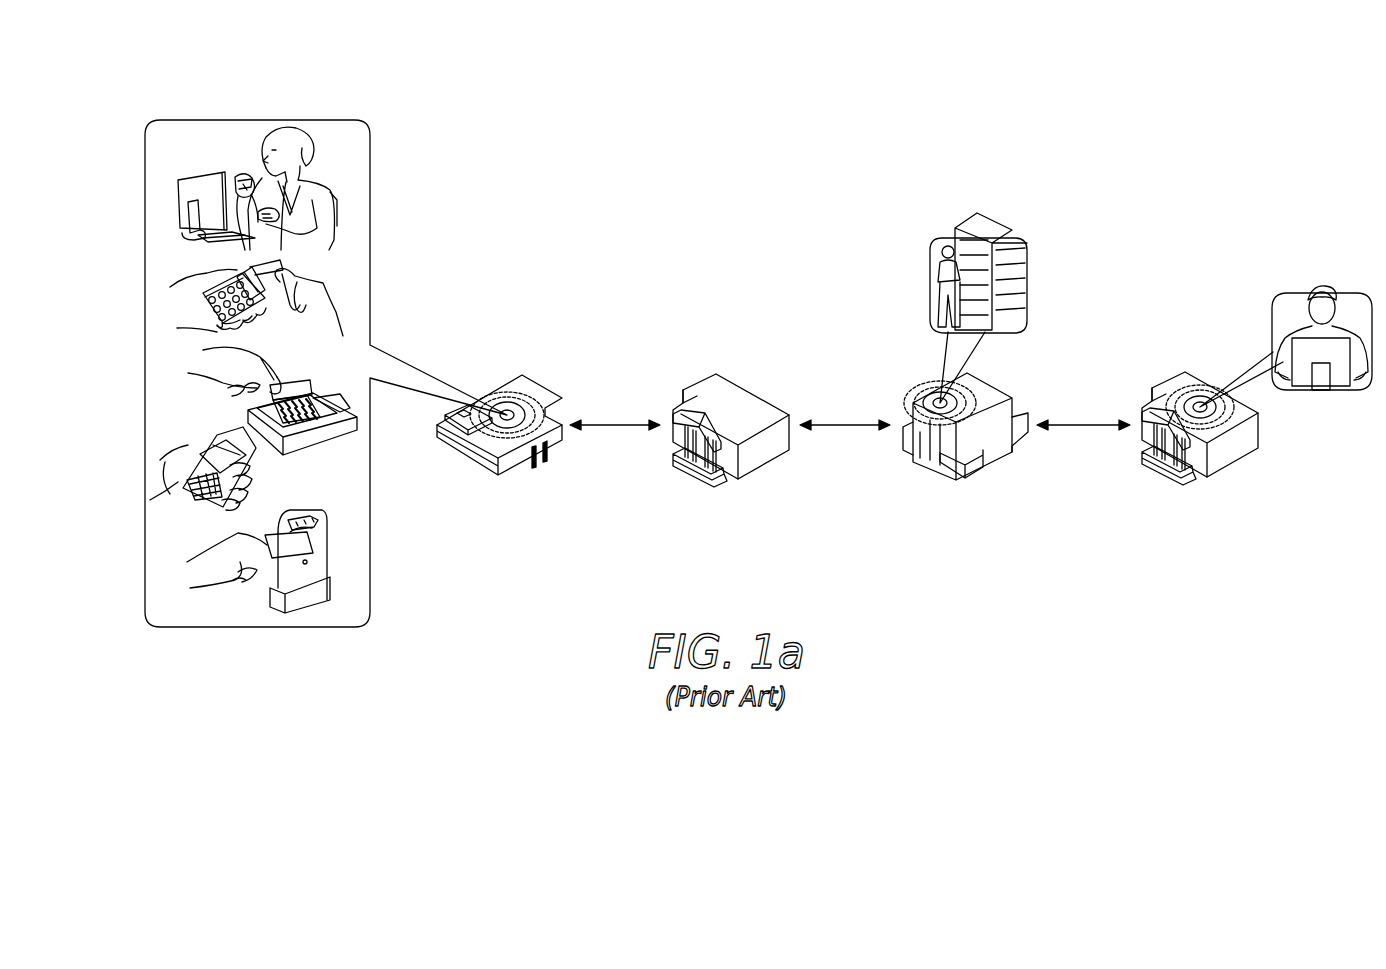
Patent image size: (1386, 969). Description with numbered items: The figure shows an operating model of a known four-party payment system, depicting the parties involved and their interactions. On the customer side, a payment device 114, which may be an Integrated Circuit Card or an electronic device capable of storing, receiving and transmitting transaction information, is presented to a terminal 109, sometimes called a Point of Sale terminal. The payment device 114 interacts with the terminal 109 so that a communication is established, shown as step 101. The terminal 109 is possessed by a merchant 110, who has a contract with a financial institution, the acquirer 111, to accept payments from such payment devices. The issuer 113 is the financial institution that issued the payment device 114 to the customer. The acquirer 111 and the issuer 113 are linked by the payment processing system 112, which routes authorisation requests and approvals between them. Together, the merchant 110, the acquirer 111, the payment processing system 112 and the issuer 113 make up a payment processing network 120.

The step of establishing communication 101 is at (322, 97).
The terminal 109 is at (317, 440).
The merchant 110 is at (535, 387).
The acquirer 111 is at (742, 392).
The payment processing system 112 is at (1002, 460).
The issuer 113 is at (1170, 382).
The payment device 114 is at (247, 179).
The payment processing network 120 is at (699, 200).